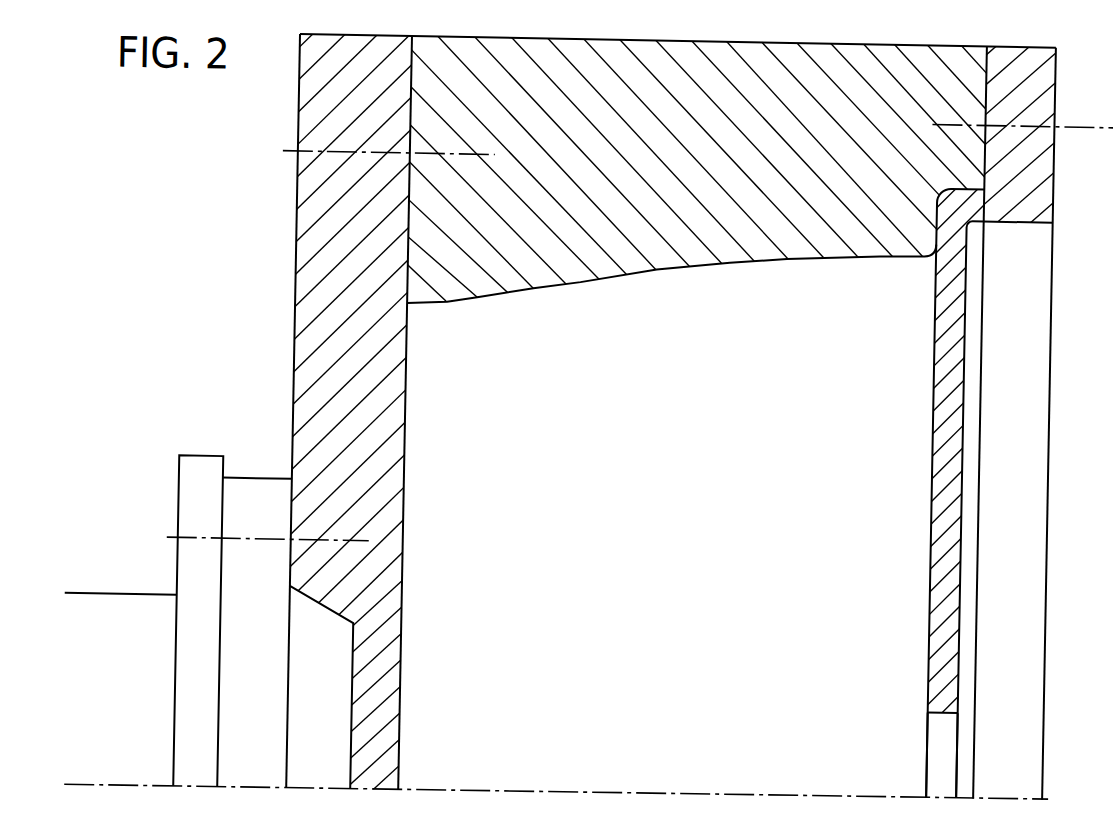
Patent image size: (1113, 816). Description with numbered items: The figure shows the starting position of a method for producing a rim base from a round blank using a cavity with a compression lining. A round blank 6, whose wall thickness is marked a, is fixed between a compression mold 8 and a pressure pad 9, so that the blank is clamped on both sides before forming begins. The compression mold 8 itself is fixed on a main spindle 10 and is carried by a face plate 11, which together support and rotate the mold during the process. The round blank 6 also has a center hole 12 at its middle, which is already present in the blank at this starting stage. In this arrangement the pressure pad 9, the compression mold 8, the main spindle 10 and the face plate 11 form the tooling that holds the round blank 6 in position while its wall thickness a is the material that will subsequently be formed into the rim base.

The round blank 6 is at (908, 632).
The compression mold 8 is at (715, 137).
The pressure pad 9 is at (1033, 400).
The main spindle 10 is at (206, 428).
The face plate 11 is at (395, 463).
The center hole 12 is at (1006, 754).
The wall thickness a is at (882, 435).